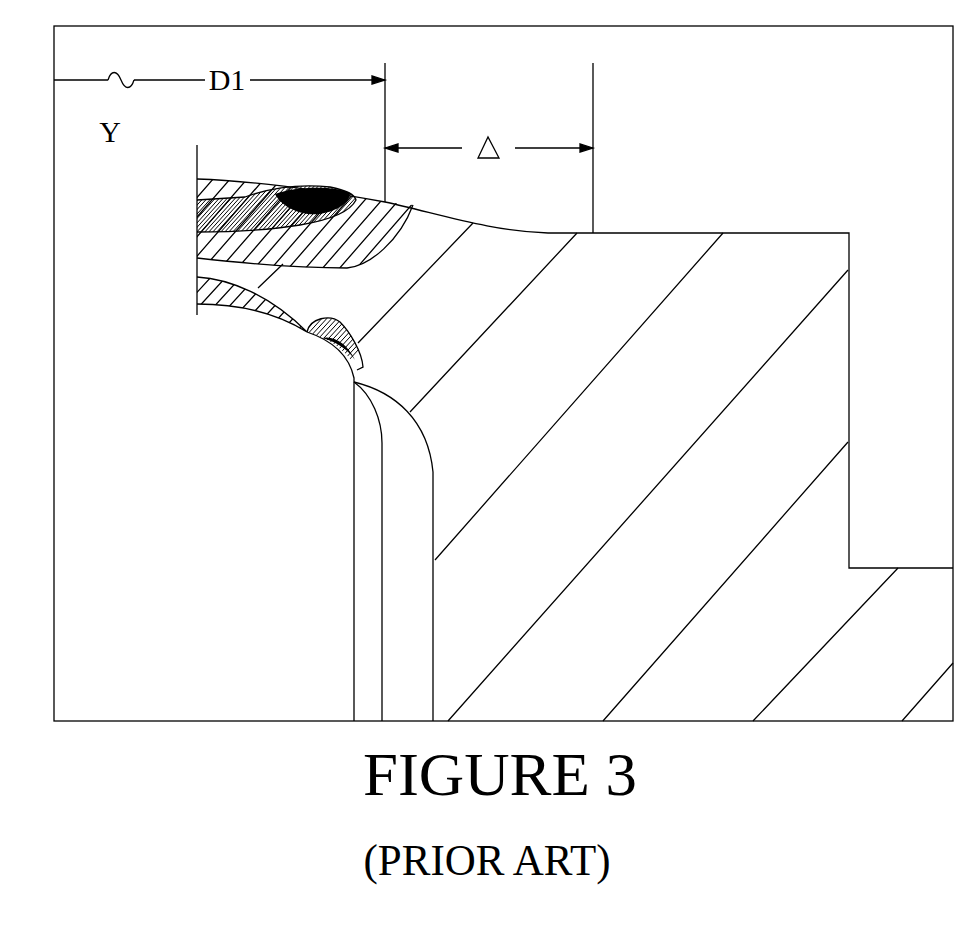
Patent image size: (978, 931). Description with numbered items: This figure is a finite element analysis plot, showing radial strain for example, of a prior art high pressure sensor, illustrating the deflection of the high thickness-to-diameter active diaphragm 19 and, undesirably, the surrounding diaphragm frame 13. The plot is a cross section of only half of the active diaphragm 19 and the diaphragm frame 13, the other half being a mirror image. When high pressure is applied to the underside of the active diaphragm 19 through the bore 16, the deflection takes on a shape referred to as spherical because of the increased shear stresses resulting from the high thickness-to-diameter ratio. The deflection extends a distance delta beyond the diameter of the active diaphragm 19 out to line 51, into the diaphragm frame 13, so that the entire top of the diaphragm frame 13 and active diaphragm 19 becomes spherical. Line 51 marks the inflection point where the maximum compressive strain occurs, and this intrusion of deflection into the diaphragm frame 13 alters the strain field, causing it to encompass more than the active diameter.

The diaphragm frame 13 is at (767, 233).
The bore 16 is at (352, 521).
The active diaphragm 19 is at (220, 325).
The line 51 is at (593, 148).